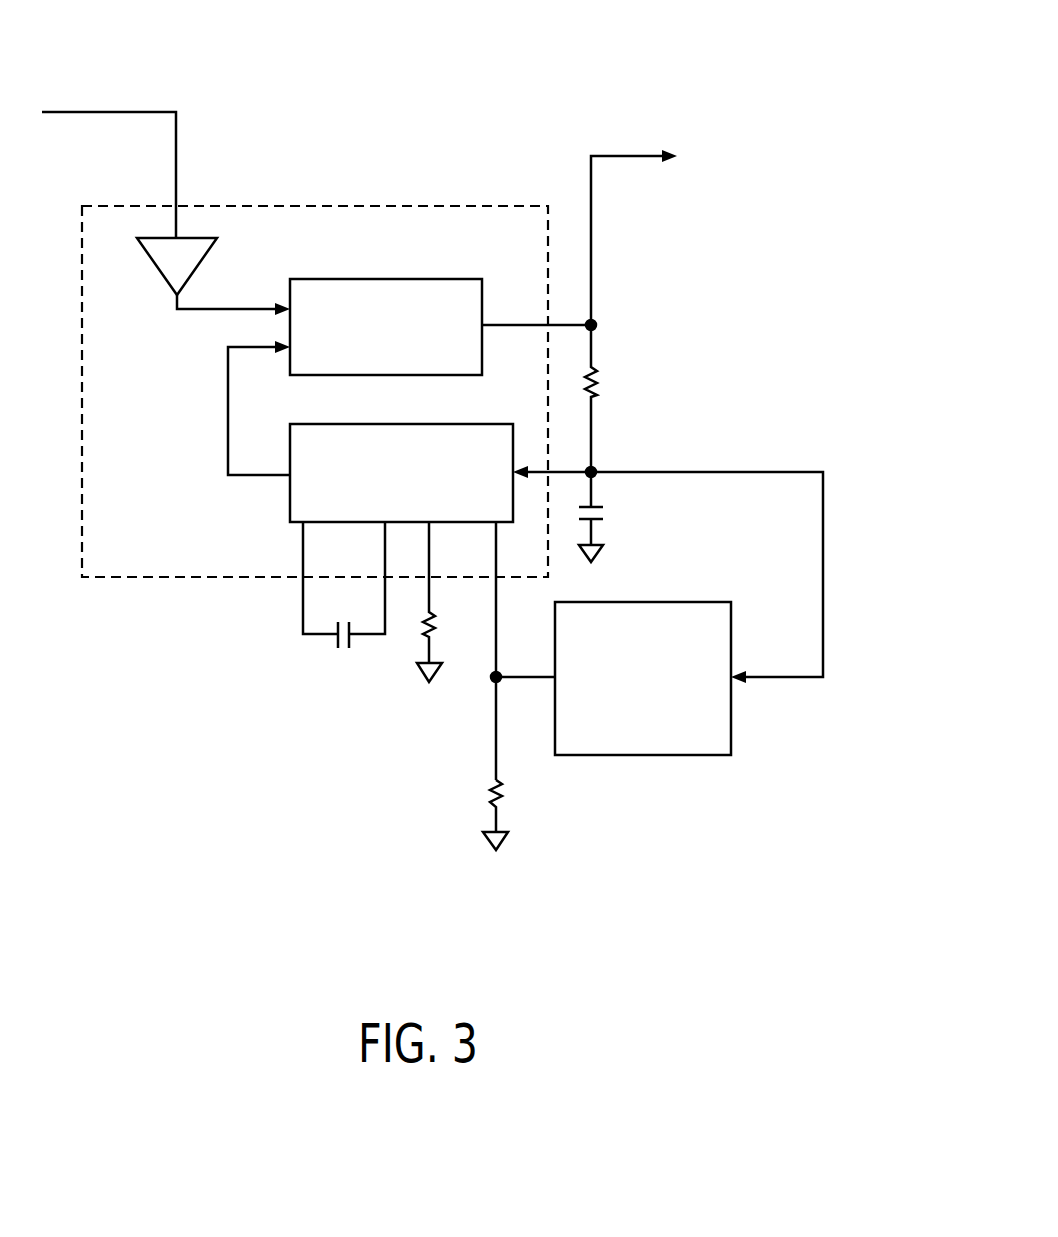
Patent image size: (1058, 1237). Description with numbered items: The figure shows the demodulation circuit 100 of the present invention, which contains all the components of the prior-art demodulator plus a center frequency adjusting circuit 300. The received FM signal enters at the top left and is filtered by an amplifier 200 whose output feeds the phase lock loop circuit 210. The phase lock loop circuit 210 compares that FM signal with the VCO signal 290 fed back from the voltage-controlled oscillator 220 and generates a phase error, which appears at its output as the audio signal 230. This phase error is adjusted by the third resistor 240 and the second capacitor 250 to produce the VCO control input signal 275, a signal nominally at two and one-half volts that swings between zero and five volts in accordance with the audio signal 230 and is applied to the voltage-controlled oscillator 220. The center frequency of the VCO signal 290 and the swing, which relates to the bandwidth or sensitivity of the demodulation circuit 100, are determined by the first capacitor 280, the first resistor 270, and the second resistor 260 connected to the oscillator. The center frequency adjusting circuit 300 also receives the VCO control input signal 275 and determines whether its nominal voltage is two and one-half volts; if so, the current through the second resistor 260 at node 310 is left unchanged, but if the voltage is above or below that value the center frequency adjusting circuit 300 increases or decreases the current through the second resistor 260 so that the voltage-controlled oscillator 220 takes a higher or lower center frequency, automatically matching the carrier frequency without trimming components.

The demodulation circuit 100 is at (274, 716).
The amplifier 200 is at (197, 238).
The phase lock loop circuit 210 is at (362, 279).
The voltage-controlled oscillator (VCO) 220 is at (290, 503).
The audio signal 230 is at (788, 149).
The R3 240 is at (666, 385).
The C2 250 is at (668, 516).
The R2 260 is at (580, 796).
The R1 270 is at (463, 662).
The VCO control input signal 275 is at (823, 506).
The C1 280 is at (336, 640).
The VCO signal 290 is at (227, 410).
The center frequency adjusting circuit 300 is at (731, 725).
The node 310 is at (499, 682).